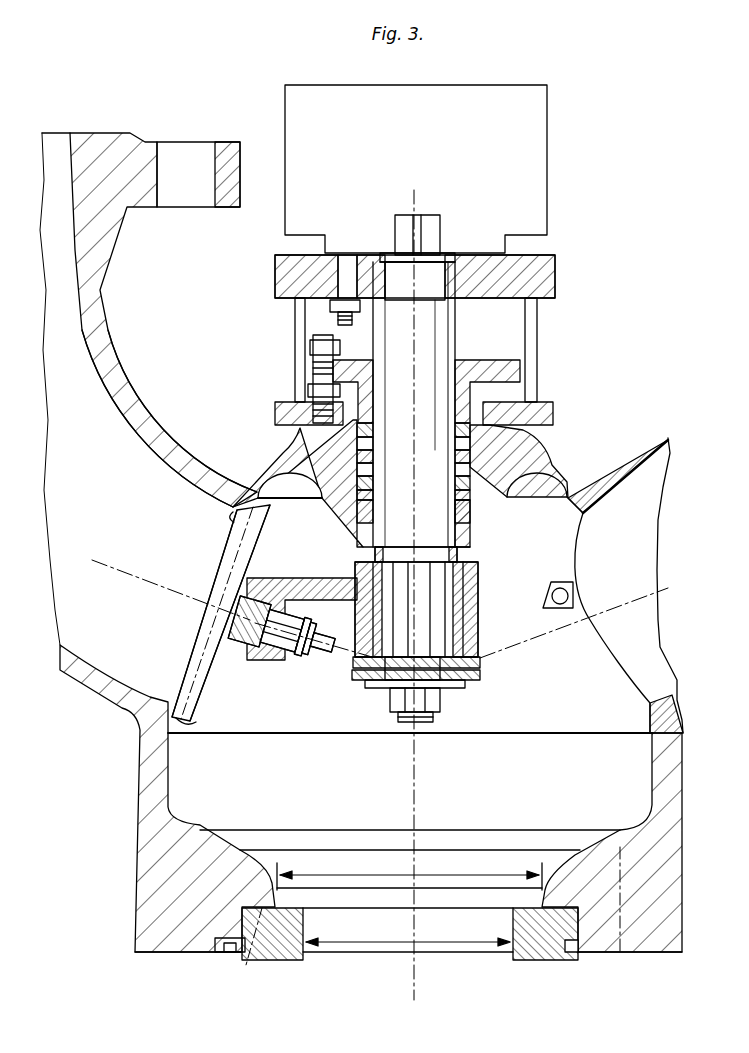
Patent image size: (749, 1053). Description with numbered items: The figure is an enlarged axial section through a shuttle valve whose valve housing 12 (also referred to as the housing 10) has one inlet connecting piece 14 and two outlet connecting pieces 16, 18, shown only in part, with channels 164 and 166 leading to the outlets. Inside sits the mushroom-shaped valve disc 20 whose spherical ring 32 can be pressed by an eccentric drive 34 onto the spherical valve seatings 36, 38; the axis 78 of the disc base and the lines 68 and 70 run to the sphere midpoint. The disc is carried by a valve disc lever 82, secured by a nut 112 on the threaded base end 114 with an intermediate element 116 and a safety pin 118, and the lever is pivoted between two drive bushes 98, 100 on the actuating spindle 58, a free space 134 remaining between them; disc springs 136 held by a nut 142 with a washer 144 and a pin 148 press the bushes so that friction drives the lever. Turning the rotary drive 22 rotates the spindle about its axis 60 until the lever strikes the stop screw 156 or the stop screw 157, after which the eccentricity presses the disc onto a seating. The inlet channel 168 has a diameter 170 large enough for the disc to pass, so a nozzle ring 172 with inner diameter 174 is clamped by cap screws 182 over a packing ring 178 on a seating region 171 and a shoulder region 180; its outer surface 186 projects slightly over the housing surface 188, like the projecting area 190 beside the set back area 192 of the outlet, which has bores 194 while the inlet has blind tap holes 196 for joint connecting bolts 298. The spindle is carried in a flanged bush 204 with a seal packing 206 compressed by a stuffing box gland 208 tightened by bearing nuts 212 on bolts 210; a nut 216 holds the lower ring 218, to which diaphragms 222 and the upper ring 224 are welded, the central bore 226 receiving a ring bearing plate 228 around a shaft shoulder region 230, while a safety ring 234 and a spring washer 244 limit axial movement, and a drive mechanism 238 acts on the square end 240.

The housing 10 is at (88, 776).
The valve housing 12 is at (262, 460).
The inlet connecting piece 14 is at (620, 948).
The outlet connecting piece 16 is at (103, 133).
The outlet connecting piece 18 is at (666, 437).
The valve disc 20 is at (185, 644).
The rotary drive 22 is at (400, 215).
The spherical ring 32 is at (222, 553).
The eccentric drive 34 is at (470, 686).
The valve seating 36 is at (272, 508).
The valve seating 38 is at (580, 512).
The actuating spindle 58 is at (456, 322).
The spindle axis 60 is at (418, 805).
The line to sphere midpoint 68 is at (618, 606).
The axis of valve seat 70 is at (120, 570).
The axis of the mushroom base 78 is at (207, 610).
The valve disc lever 82 is at (242, 660).
The drive bush 98 is at (478, 575).
The drive bush 100 is at (455, 650).
The nut 112 is at (298, 655).
The threaded end of the base 114 is at (312, 660).
The nut 116 is at (276, 658).
The safety pin 118 is at (300, 632).
The free space 134 is at (478, 607).
The disc springs 136 is at (480, 665).
The nut 142 is at (440, 705).
The washer 144 is at (398, 717).
The pin 148 is at (420, 722).
The stop screw 156 is at (302, 607).
The stop screw 157 is at (556, 582).
The channel 164 is at (125, 385).
The channel 166 is at (658, 503).
The inlet channel 168 is at (385, 918).
The diameter of inlet channel 170 is at (409, 871).
The seat 171 is at (262, 865).
The nozzle ring 172 is at (282, 950).
The inner diameter of nozzle ring 174 is at (455, 950).
The packing ring 178 is at (250, 951).
The notch 180 is at (572, 950).
The cap screws 182 is at (220, 950).
The outward lying surface of nozzle ring 186 is at (530, 955).
The housing surface 188 is at (672, 955).
The projecting area 190 is at (140, 135).
The set back area 192 is at (228, 142).
The bores 194 is at (180, 200).
The blind tap holes 196 is at (622, 885).
The flanged bush 204 is at (357, 515).
The seal packing 206 is at (375, 460).
The stuffing box gland 208 is at (520, 372).
The bolts 210 is at (308, 390).
The bearing nuts 212 is at (310, 346).
The nut 216 is at (280, 404).
The lower ring 218 is at (554, 410).
The diaphragms 222 is at (538, 325).
The upper ring 224 is at (556, 270).
The central bore 226 is at (470, 290).
The ring bearing plate 228 is at (460, 275).
The coupling hub 230 is at (390, 270).
The safety ring 234 is at (450, 262).
The drive mechanism 238 is at (548, 92).
The square end 240 is at (425, 253).
The spring washer 244 is at (375, 556).
The joint connecting bolts 298 is at (330, 306).